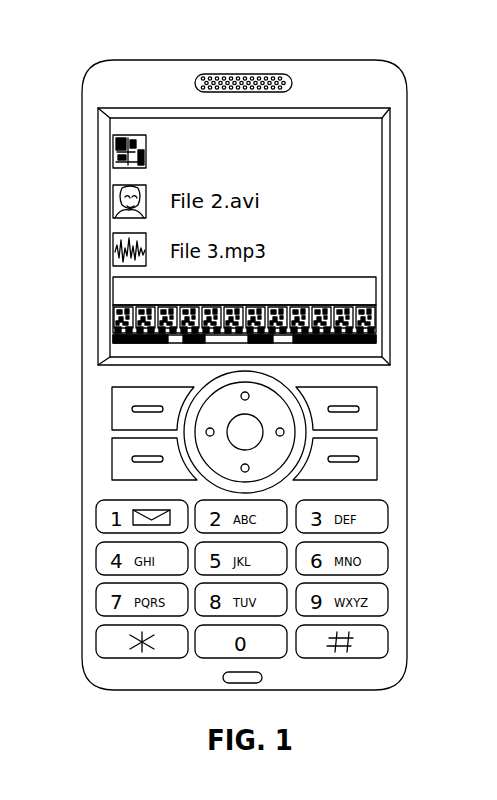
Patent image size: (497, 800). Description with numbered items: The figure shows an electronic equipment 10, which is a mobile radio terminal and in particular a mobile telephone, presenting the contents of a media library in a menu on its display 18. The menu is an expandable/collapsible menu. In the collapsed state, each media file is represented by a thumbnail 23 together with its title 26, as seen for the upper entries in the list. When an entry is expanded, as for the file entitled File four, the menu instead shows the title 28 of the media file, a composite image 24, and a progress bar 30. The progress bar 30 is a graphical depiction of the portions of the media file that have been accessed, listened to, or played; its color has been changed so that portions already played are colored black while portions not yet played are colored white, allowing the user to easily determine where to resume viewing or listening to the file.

The electronic equipment 10 is at (95, 53).
The display 18 is at (110, 222).
The thumbnail 23 is at (113, 147).
The title 26 is at (265, 153).
The title 28 is at (113, 282).
The composite image 24 is at (113, 310).
The progress bar 30 is at (113, 339).